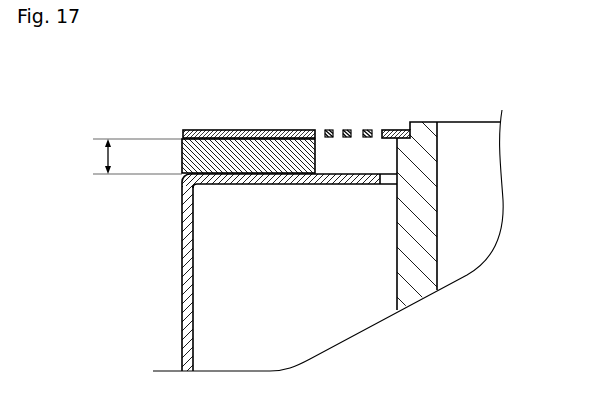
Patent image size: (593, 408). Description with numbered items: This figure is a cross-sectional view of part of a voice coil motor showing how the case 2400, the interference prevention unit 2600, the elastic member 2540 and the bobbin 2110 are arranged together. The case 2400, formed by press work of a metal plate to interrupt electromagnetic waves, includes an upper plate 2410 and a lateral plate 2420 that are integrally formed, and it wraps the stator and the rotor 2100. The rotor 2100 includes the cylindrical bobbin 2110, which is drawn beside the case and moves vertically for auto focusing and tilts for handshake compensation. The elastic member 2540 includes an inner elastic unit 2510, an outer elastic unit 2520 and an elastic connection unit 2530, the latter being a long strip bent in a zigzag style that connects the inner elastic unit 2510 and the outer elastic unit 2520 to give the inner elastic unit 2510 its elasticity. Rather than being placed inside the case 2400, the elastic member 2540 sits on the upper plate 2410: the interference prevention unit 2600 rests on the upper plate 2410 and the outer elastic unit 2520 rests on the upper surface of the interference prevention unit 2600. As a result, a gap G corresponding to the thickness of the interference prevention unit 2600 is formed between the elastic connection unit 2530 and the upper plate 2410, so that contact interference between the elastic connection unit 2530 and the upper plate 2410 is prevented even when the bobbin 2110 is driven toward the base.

The rotor 2100 is at (373, 240).
The bobbin 2110 is at (428, 267).
The case 2400 is at (198, 272).
The upper plate 2410 is at (253, 184).
The lateral plate 2420 is at (182, 272).
The inner elastic unit 2510 is at (395, 130).
The outer elastic unit 2520 is at (225, 130).
The elastic connection unit 2530 is at (347, 130).
The elastic member 2540 is at (253, 103).
The interference prevention unit 2600 is at (272, 140).
The gap G is at (135, 156).